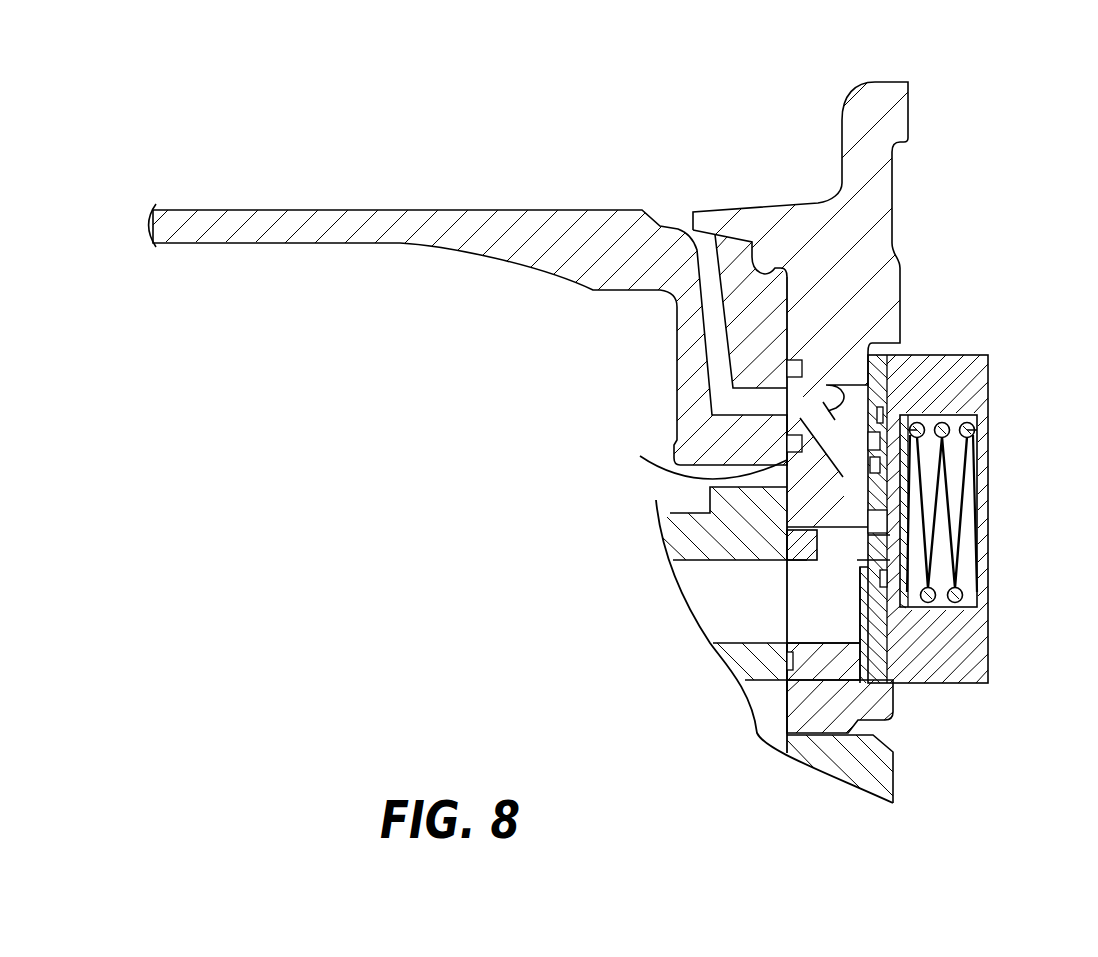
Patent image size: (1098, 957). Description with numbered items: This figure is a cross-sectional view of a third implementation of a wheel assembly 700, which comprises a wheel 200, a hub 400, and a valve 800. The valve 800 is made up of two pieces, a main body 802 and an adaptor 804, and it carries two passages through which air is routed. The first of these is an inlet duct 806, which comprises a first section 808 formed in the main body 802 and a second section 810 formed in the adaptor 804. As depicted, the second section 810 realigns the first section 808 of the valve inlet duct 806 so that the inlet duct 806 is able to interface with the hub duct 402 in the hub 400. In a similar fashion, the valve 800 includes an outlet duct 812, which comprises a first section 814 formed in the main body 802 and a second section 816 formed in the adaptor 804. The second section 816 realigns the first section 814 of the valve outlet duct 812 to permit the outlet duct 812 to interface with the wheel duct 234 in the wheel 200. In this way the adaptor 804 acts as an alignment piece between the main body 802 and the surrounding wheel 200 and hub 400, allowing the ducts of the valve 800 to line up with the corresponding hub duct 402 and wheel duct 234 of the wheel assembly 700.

The wheel 200 is at (877, 205).
The wheel duct 234 is at (838, 406).
The hub 400 is at (893, 772).
The hub duct 402 is at (729, 668).
The wheel assembly 700 is at (1093, 207).
The valve 800 is at (977, 375).
The main body 802 is at (992, 407).
The adaptor 804 is at (890, 695).
The inlet duct 806 is at (858, 548).
The first section 808 is at (755, 633).
The second section 810 is at (830, 628).
The outlet duct 812 is at (866, 428).
The first section 814 is at (852, 470).
The second section 816 is at (880, 522).